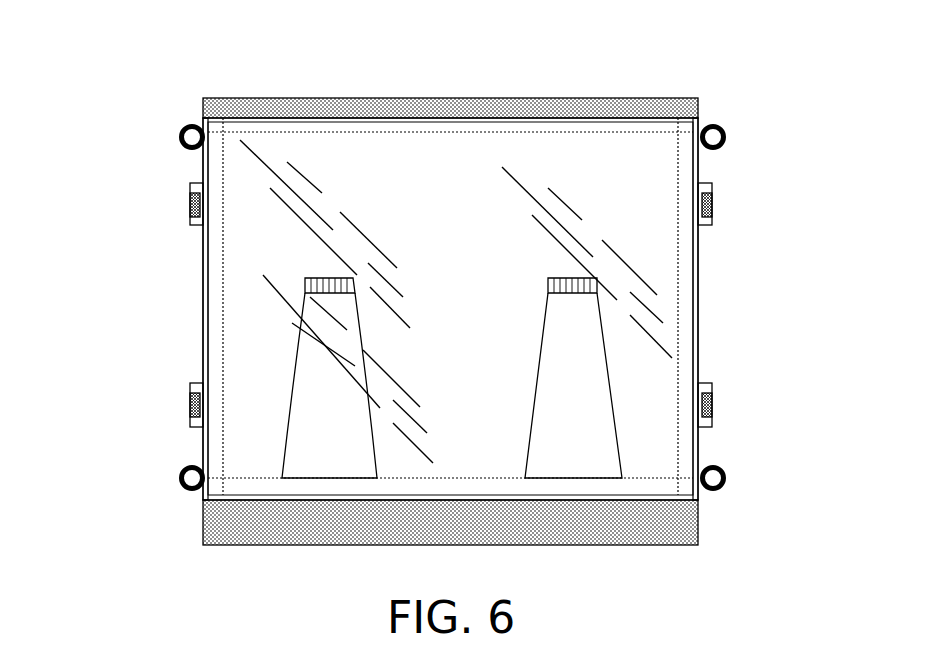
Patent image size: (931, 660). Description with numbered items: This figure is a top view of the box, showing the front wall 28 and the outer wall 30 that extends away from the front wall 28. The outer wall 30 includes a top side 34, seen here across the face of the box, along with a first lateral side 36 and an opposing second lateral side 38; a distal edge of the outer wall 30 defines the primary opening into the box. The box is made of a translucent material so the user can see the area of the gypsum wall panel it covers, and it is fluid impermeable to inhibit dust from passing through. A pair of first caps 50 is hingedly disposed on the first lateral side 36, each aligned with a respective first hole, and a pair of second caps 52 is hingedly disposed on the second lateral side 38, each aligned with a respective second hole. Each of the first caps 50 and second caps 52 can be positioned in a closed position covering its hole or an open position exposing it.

The front wall 28 is at (447, 500).
The outer wall 30 is at (402, 183).
The top side 34 is at (570, 160).
The first lateral side 36 is at (202, 293).
The second lateral side 38 is at (698, 308).
The first caps 50 is at (193, 207).
The second caps 52 is at (712, 206).